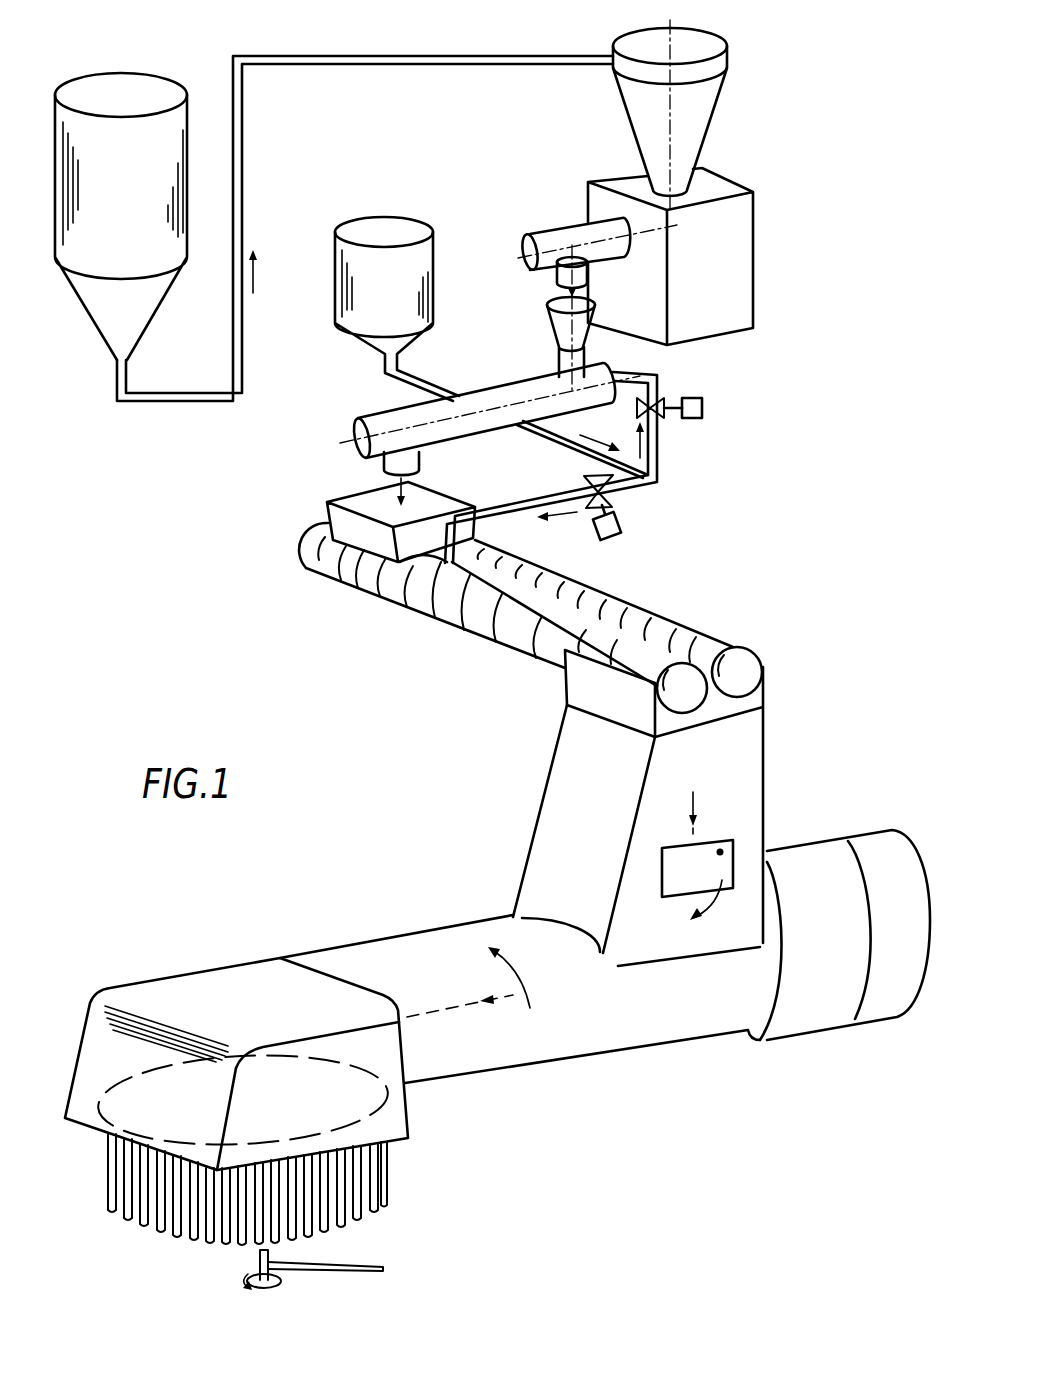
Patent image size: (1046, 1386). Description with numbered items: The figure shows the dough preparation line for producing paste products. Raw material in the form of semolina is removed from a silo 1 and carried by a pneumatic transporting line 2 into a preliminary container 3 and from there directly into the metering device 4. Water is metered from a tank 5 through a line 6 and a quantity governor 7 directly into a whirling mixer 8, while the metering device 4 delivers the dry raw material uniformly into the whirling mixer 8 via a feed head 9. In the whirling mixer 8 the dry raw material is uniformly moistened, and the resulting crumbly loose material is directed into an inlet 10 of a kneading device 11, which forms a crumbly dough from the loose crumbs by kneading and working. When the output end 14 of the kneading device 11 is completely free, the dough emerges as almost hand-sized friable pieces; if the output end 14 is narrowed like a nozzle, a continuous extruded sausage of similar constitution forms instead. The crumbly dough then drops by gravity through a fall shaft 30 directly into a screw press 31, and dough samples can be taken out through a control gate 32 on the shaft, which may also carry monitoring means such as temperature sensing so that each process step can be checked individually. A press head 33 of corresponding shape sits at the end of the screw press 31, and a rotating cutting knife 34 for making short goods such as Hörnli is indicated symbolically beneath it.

The silo 1 is at (180, 125).
The pneumatic transporting line 2 is at (435, 56).
The preliminary container 3 is at (703, 112).
The metering device 4 is at (733, 250).
The tank 5 is at (400, 228).
The line 6 is at (565, 448).
The quantity governor 7 is at (704, 406).
The whirling mixer 8 is at (390, 416).
The feed head 9 is at (556, 236).
The inlet 10 is at (320, 519).
The kneading device 11 is at (467, 617).
The output end 14 is at (580, 690).
The fall shaft 30 is at (756, 768).
The screw press 31 is at (508, 1060).
The control gate 32 is at (730, 868).
The press head 33 is at (205, 988).
The rotating cutting knife 34 is at (388, 1268).